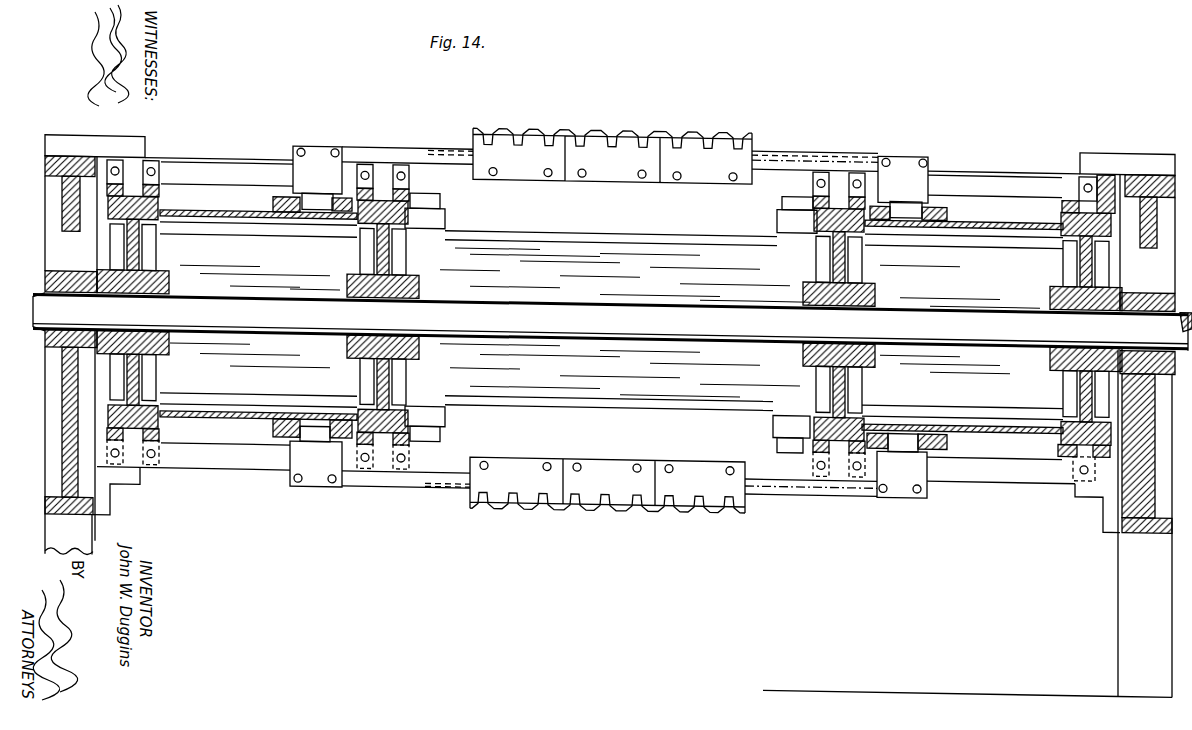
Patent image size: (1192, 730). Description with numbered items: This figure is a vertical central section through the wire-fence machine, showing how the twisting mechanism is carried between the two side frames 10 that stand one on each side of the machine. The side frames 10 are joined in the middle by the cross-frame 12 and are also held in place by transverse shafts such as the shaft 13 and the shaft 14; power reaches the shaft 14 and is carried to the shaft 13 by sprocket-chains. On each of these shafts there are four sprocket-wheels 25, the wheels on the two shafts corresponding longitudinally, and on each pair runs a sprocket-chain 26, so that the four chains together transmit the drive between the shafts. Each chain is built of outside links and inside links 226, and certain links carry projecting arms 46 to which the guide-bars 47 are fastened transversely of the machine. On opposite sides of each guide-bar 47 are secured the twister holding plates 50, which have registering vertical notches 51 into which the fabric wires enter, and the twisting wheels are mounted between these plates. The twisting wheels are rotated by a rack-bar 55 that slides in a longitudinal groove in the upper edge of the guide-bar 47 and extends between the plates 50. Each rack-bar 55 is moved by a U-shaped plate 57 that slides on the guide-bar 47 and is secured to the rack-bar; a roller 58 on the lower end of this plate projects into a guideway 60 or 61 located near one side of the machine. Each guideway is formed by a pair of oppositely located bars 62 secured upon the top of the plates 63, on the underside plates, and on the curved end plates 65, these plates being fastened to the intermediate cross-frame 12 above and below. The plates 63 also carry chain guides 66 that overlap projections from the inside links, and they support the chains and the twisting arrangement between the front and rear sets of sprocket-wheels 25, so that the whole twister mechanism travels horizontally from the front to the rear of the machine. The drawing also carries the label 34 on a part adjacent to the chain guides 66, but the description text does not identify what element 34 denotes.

The side frame 10 is at (45, 468).
The cross-frame 12 is at (605, 320).
The shaft 13 is at (640, 292).
The shaft 14 is at (167, 272).
The sprocket-wheel 25 is at (139, 255).
The sprocket-chain 26 is at (158, 189).
The cylinder wall 34 is at (443, 409).
The projecting arm 46 is at (160, 155).
The guide-bar 47 is at (210, 163).
The twister holding plate 50 is at (597, 122).
The vertical notch 51 is at (487, 129).
The rack-bar 55 is at (358, 147).
The U-shaped plate 57 is at (300, 140).
The roller 58 is at (275, 200).
The guideway 60 is at (313, 414).
The guideway 61 is at (320, 199).
The bar 62 is at (945, 200).
The plate 63 is at (447, 220).
The curved end plate 65 is at (233, 213).
The chain guide 66 is at (440, 193).
The inside link 226 is at (832, 470).